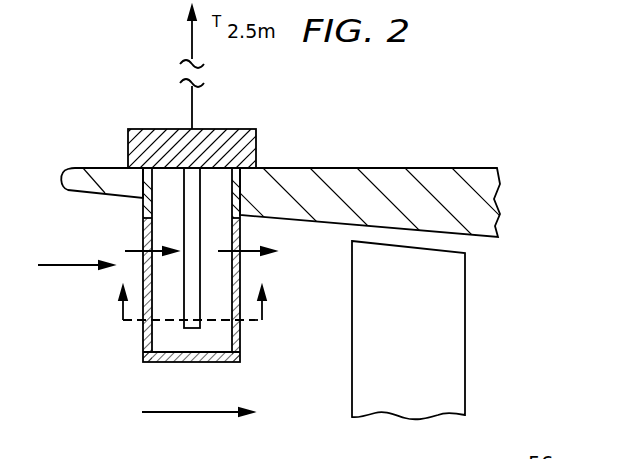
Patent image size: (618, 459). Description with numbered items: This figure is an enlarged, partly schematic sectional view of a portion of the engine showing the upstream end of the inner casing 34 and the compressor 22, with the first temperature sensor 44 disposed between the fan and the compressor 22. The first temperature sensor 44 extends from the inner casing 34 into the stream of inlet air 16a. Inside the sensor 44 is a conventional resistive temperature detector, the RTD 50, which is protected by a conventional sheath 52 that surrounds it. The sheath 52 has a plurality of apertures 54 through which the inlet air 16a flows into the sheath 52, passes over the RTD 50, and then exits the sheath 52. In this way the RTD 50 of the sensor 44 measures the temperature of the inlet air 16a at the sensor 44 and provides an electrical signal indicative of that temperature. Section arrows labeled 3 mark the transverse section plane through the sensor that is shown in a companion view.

The inlet air 16a is at (63, 263).
The compressor 22 is at (465, 322).
The inner casing 34 is at (440, 168).
The first temperature sensor 44 is at (262, 138).
The RTD 50 is at (191, 328).
The sheath 52 is at (240, 345).
The apertures 54 is at (143, 335).
The section line 3 is at (194, 301).